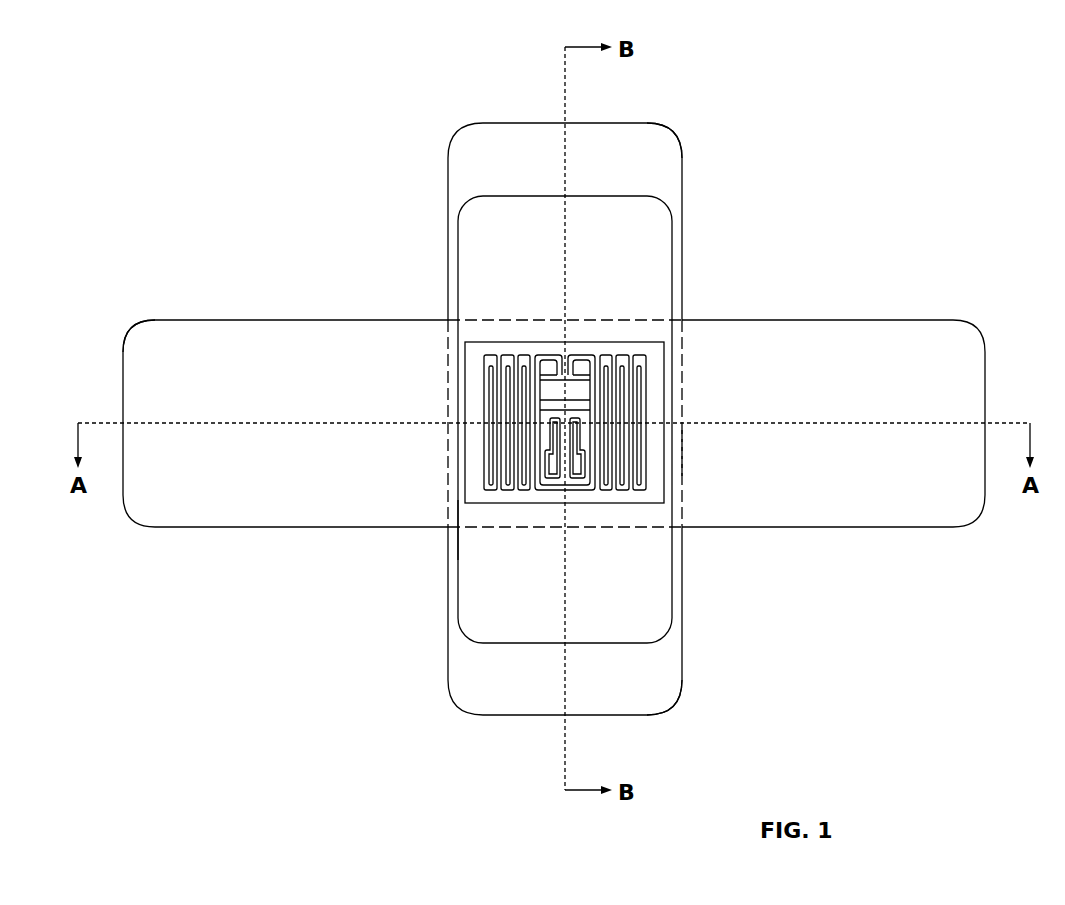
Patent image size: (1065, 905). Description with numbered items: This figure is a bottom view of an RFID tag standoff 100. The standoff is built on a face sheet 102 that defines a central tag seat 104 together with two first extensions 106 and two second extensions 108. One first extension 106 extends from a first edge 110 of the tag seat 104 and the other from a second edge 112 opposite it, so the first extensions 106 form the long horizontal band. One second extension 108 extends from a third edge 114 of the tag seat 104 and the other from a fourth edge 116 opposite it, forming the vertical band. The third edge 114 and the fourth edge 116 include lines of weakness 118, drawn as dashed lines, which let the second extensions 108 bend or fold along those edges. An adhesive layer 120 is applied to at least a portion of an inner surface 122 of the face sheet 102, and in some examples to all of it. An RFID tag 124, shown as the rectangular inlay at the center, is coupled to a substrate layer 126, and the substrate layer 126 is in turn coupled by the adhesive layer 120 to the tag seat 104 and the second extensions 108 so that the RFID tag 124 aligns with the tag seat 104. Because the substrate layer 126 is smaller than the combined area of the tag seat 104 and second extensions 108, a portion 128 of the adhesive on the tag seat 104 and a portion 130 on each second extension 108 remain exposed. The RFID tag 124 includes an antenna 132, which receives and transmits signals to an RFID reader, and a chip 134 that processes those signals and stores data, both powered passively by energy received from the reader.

The RFID tag standoff 100 is at (276, 66).
The face sheet 102 is at (253, 343).
The tag seat 104 is at (648, 338).
The first extensions 106 is at (194, 320).
The second extensions 108 is at (496, 122).
The first edge 110 is at (448, 395).
The second edge 112 is at (683, 492).
The third edge 114 is at (622, 320).
The fourth edge 116 is at (485, 490).
The lines of weakness 118 is at (502, 320).
The adhesive layer 120 is at (633, 140).
The inner surface 122 is at (140, 360).
The RFID tag 124 is at (457, 471).
The substrate layer 126 is at (487, 225).
The portion of the adhesive layer 128 is at (677, 453).
The portion of the adhesive layer 130 is at (667, 158).
The antenna 132 is at (458, 527).
The chip 134 is at (563, 427).